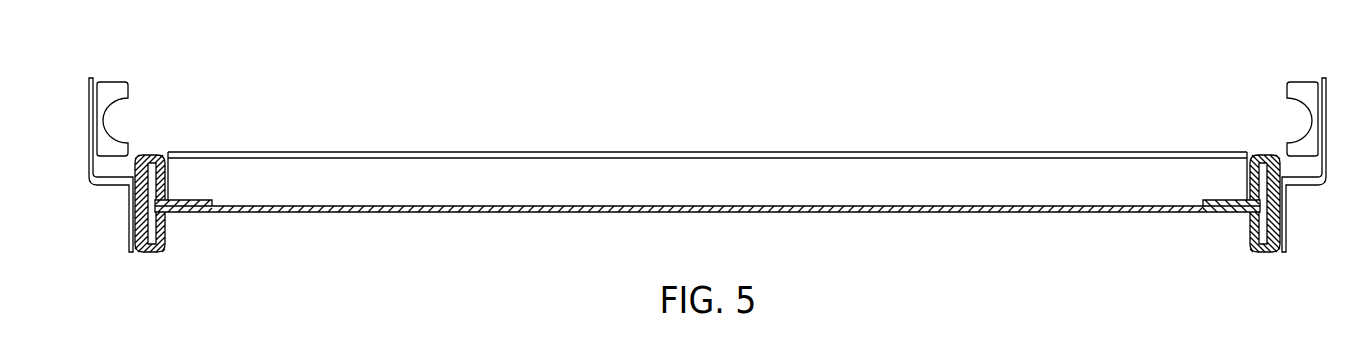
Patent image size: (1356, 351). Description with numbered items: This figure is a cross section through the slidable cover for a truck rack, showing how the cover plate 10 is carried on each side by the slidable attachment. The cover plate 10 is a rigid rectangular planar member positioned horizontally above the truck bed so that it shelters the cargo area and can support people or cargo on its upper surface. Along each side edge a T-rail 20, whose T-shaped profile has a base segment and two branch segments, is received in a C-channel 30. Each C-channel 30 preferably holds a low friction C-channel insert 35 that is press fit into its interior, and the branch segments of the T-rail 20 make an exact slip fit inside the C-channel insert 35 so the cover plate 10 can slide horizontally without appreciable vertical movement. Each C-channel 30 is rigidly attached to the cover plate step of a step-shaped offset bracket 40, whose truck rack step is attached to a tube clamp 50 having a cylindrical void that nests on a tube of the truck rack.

The cover plate 10 is at (717, 172).
The T-rail 20 is at (203, 206).
The C-channel 30 is at (150, 158).
The C-channel insert 35 is at (152, 244).
The offset bracket 40 is at (120, 183).
The tube clamp 50 is at (111, 91).